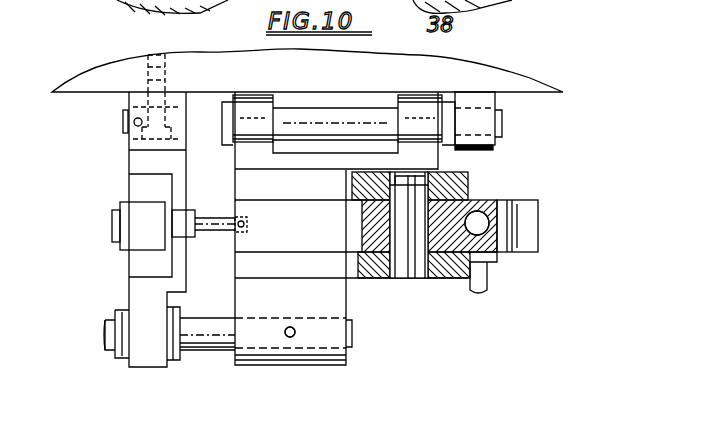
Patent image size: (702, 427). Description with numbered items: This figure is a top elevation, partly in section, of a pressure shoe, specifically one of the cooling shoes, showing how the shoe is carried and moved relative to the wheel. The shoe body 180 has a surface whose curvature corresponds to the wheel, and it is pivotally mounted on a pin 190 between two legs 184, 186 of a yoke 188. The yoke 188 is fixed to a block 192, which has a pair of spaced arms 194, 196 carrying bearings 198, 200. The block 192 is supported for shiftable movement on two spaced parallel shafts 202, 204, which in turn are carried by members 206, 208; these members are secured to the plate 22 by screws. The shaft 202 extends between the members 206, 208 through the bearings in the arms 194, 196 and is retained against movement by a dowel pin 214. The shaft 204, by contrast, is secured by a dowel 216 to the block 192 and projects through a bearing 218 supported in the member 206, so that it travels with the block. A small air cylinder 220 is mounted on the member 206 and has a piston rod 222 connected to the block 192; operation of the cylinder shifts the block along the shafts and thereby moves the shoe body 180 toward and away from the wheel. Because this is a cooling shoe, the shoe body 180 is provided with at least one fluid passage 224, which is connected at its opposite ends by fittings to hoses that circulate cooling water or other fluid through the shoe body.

The plate 22 is at (534, 80).
The shoe body 180 is at (518, 254).
The leg of yoke 184 is at (470, 188).
The leg of yoke 186 is at (455, 272).
The yoke 188 is at (367, 270).
The pin 190 is at (407, 265).
The block 192 is at (318, 362).
The arm 194 is at (256, 103).
The arm 196 is at (421, 105).
The bearing 198 is at (225, 145).
The bearing 200 is at (445, 143).
The shaft 202 is at (343, 115).
The shaft 204 is at (207, 337).
The member 206 is at (153, 352).
The member 208 is at (497, 147).
The dowel pin 214 is at (128, 128).
The dowel 216 is at (289, 338).
The bearing 218 is at (119, 352).
The air cylinder 220 is at (132, 235).
The piston rod 222 is at (227, 218).
The fluid passage 224 is at (484, 224).